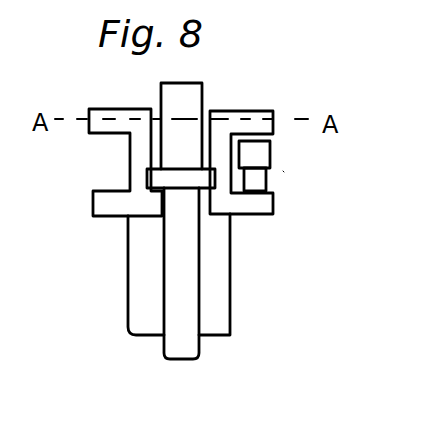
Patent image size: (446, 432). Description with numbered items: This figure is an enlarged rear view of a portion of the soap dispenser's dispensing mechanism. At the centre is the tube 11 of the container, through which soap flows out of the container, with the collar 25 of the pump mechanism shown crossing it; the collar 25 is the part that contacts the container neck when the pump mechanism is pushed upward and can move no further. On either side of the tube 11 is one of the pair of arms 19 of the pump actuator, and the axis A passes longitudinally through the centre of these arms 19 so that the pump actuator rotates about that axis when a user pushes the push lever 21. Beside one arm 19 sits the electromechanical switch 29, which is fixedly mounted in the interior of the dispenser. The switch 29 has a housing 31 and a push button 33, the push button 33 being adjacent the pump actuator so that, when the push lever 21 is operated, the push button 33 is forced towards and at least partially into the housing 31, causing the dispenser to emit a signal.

The tube 11 is at (172, 352).
The arms 19 is at (90, 107).
The push lever 21 is at (228, 313).
The collar 25 is at (150, 171).
The electromechanical switch 29 is at (292, 176).
The housing 31 is at (271, 152).
The push button 33 is at (266, 180).